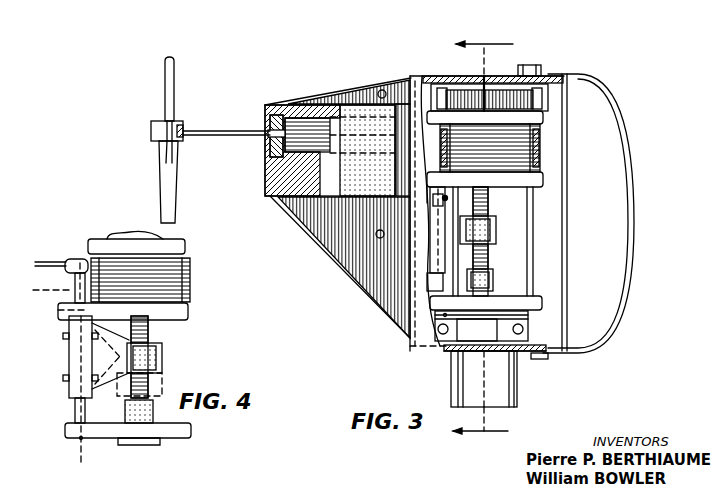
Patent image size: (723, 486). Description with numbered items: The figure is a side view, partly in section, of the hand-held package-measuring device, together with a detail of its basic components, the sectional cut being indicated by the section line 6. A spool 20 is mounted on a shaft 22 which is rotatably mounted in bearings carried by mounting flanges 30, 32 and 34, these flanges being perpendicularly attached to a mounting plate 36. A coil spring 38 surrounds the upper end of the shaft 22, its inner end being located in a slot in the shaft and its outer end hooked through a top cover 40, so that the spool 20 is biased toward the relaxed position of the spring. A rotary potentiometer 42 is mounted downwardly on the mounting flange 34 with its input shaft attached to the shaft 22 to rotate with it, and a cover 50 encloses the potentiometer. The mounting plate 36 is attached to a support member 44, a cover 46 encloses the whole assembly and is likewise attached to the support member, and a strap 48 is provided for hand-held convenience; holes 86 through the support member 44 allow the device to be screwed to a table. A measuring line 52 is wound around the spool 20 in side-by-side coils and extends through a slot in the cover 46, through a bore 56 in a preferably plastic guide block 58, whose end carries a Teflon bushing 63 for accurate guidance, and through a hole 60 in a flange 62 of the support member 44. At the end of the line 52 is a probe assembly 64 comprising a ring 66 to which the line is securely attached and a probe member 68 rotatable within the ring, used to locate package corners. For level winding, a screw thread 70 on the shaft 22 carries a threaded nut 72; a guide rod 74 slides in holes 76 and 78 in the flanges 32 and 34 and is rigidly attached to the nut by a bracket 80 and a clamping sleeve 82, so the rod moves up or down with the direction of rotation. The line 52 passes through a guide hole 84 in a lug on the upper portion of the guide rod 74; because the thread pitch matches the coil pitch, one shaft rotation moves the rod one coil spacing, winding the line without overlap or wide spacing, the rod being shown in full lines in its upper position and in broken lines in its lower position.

In FIG. 3, the section line 6 is at (492, 238).
In FIG. 3, the spool 20 is at (532, 150).
In FIG. 4, the spool 20 is at (182, 286).
In FIG. 3, the shaft 22 is at (490, 190).
In FIG. 4, the shaft 22 is at (144, 318).
In FIG. 3, the mounting flange 30 is at (535, 110).
In FIG. 4, the mounting flange 30 is at (177, 239).
In FIG. 3, the mounting flange 32 is at (535, 172).
In FIG. 4, the mounting flange 32 is at (180, 303).
In FIG. 3, the mounting flange 34 is at (534, 295).
In FIG. 4, the mounting flange 34 is at (183, 422).
In FIG. 3, the mounting plate 36 is at (510, 262).
In FIG. 3, the coil spring 38 is at (500, 73).
In FIG. 3, the top cover 40 is at (464, 76).
In FIG. 3, the rotary potentiometer 42 is at (432, 345).
In FIG. 4, the rotary potentiometer 42 is at (152, 436).
In FIG. 3, the support member 44 is at (388, 67).
In FIG. 3, the cover 46 is at (397, 336).
In FIG. 3, the strap 48 is at (594, 78).
In FIG. 3, the cover 50 is at (506, 378).
In FIG. 3, the measuring line 52 is at (229, 122).
In FIG. 4, the measuring line 52 is at (42, 250).
In FIG. 3, the bore 56 is at (282, 110).
In FIG. 3, the guide block 58 is at (290, 190).
In FIG. 3, the hole 60 is at (262, 115).
In FIG. 3, the flange 62 is at (264, 180).
In FIG. 3, the bushing 63 is at (262, 146).
In FIG. 3, the probe assembly 64 is at (151, 144).
In FIG. 3, the ring 66 is at (172, 116).
In FIG. 3, the probe member 68 is at (159, 96).
In FIG. 3, the screw thread 70 is at (476, 258).
In FIG. 4, the screw thread 70 is at (142, 326).
In FIG. 3, the threaded nut 72 is at (488, 224).
In FIG. 4, the threaded nut 72 is at (154, 355).
In FIG. 3, the guide rod 74 is at (419, 275).
In FIG. 4, the guide rod 74 is at (67, 400).
In FIG. 3, the hole 76 is at (425, 171).
In FIG. 4, the hole 76 is at (56, 311).
In FIG. 3, the hole 78 is at (427, 292).
In FIG. 4, the hole 78 is at (71, 431).
In FIG. 3, the bracket 80 is at (462, 189).
In FIG. 4, the bracket 80 is at (106, 330).
In FIG. 3, the clamping sleeve 82 is at (425, 228).
In FIG. 4, the clamping sleeve 82 is at (61, 349).
In FIG. 4, the guide hole 84 is at (71, 251).
In FIG. 3, the holes 86 is at (372, 85).